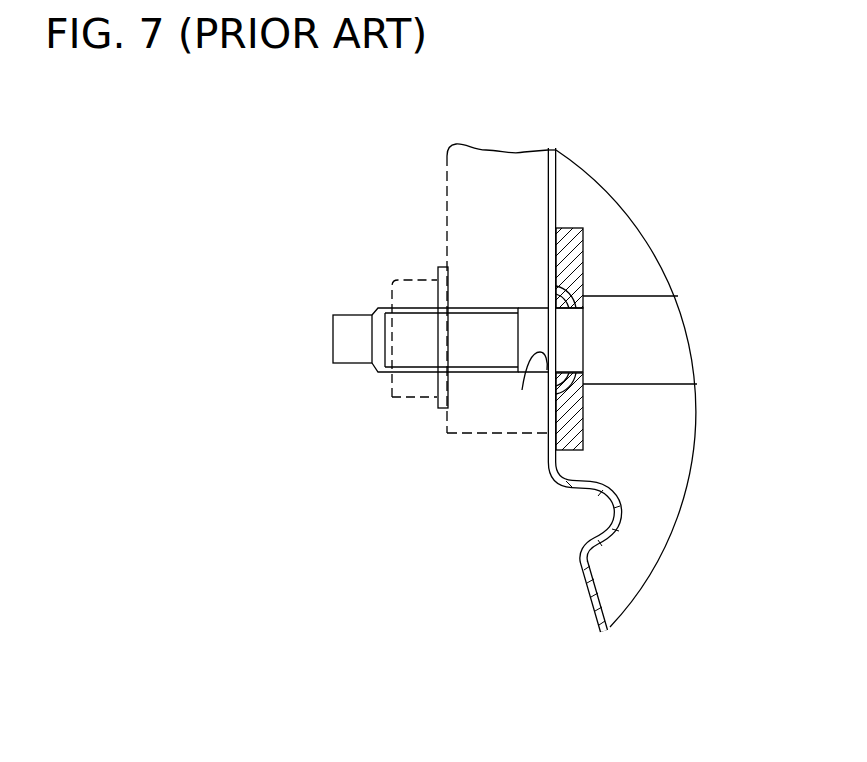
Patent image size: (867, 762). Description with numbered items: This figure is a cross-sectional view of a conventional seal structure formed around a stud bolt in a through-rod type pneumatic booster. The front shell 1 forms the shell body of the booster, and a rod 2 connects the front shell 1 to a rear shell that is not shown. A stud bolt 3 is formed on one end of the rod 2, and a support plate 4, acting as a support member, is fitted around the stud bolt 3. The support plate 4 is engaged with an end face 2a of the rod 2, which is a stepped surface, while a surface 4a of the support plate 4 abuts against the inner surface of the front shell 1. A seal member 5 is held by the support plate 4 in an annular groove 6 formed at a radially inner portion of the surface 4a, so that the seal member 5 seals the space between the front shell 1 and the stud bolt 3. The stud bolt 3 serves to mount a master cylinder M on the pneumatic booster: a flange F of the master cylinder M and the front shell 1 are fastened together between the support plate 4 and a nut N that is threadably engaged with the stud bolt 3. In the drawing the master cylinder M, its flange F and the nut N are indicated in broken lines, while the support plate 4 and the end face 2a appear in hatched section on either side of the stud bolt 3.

The front shell 1 is at (590, 599).
The rod 2 is at (675, 325).
The end face 2a is at (583, 273).
The stud bolt 3 is at (350, 323).
The support plate 4 is at (583, 430).
The surface 4a is at (547, 237).
The seal member 5 is at (553, 293).
The annular groove 6 is at (522, 390).
The master cylinder M is at (463, 208).
The nut N is at (408, 383).
The flange F is at (483, 419).